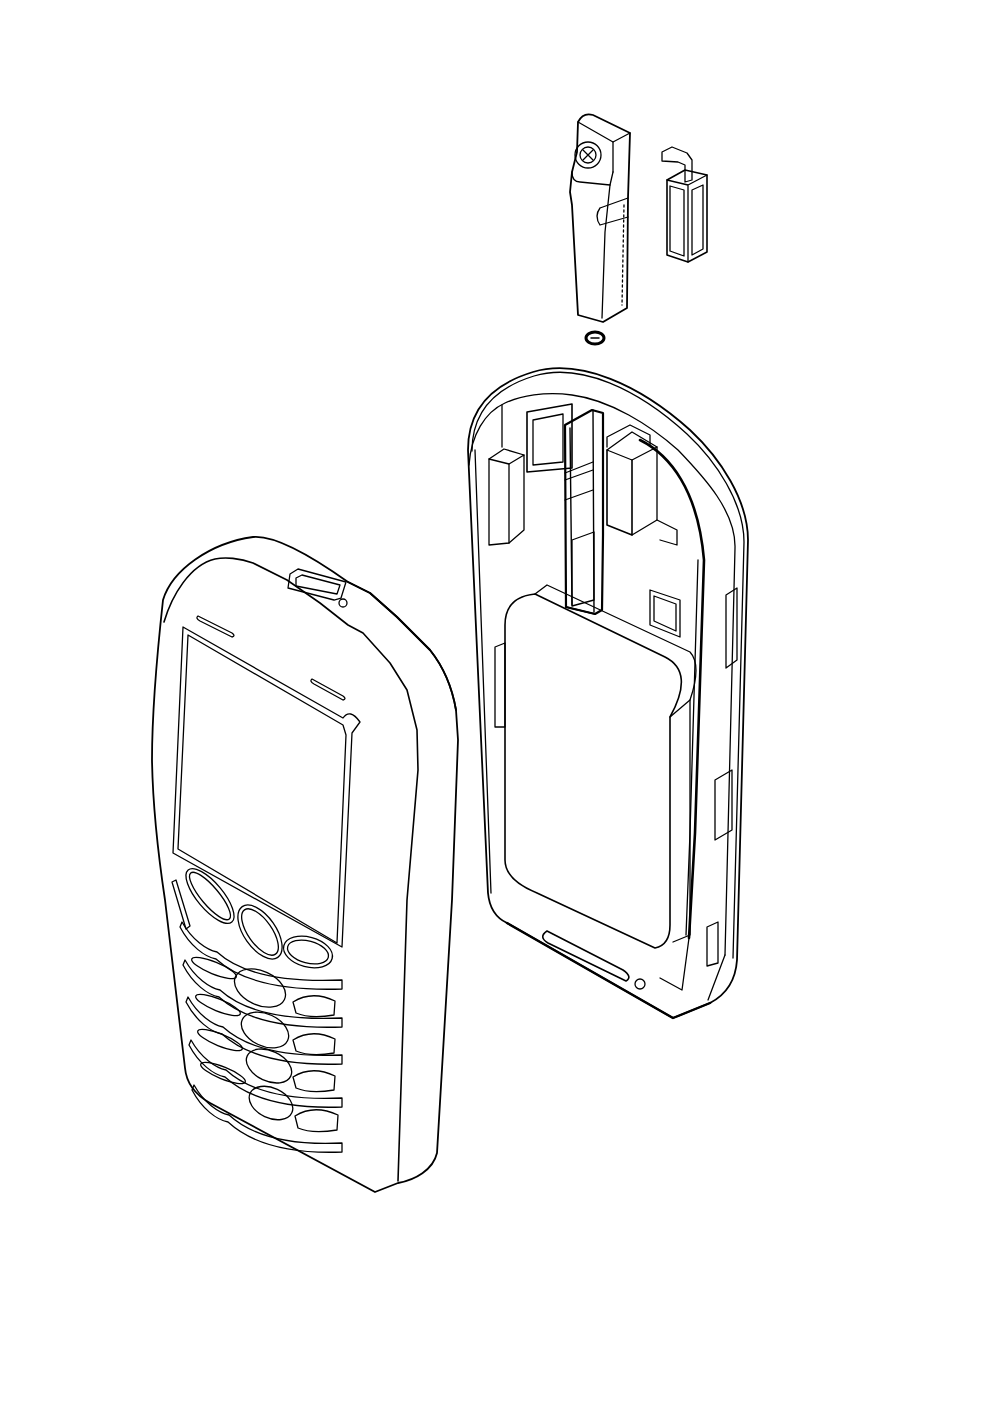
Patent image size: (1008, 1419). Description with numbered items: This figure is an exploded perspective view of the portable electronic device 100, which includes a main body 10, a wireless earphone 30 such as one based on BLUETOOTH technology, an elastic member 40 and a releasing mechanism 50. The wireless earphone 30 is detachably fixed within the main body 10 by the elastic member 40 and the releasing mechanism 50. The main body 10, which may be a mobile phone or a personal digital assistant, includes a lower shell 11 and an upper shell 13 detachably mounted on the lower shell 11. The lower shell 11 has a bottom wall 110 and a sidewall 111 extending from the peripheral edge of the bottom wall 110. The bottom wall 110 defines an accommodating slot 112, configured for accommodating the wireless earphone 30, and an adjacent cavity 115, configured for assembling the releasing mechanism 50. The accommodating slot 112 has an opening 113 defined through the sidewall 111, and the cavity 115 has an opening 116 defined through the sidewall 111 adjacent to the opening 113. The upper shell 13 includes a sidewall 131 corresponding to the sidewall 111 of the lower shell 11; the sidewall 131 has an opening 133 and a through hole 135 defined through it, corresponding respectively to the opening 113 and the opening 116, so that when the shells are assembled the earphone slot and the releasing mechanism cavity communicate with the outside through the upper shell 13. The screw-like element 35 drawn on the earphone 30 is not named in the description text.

The portable electronic device 100 is at (157, 73).
The main body 10 is at (378, 452).
The lower shell 11 is at (713, 735).
The upper shell 13 is at (425, 1075).
The wireless earphone 30 is at (639, 122).
The screw / fixing portion 35 is at (580, 150).
The elastic member 40 is at (586, 340).
The releasing mechanism 50 is at (697, 180).
The bottom wall 110 is at (548, 510).
The sidewall 111 is at (567, 405).
The accommodating slot 112 is at (583, 555).
The opening 113 is at (607, 427).
The cavity 115 is at (668, 432).
The opening 116 is at (637, 435).
The sidewall 131 is at (373, 618).
The opening 133 is at (327, 580).
The through hole 135 is at (352, 598).